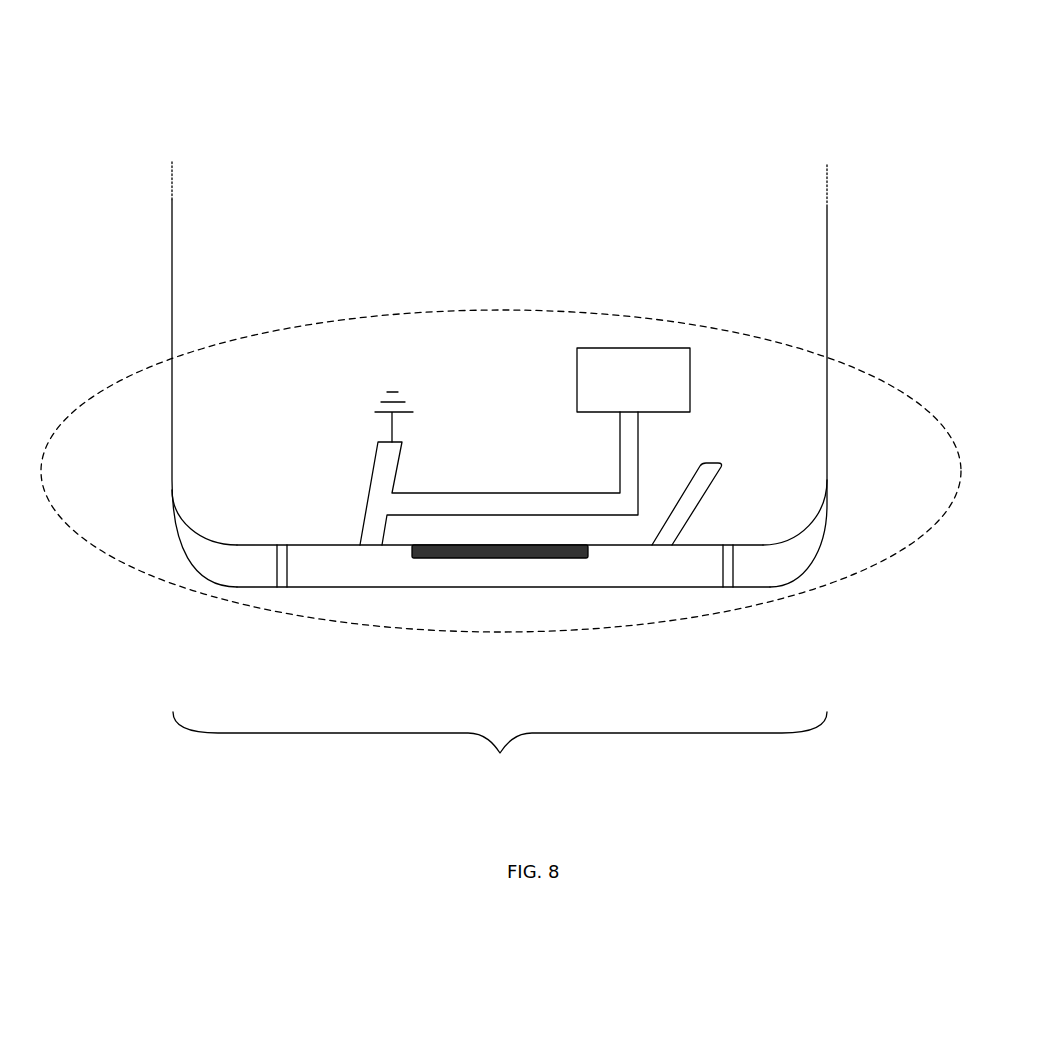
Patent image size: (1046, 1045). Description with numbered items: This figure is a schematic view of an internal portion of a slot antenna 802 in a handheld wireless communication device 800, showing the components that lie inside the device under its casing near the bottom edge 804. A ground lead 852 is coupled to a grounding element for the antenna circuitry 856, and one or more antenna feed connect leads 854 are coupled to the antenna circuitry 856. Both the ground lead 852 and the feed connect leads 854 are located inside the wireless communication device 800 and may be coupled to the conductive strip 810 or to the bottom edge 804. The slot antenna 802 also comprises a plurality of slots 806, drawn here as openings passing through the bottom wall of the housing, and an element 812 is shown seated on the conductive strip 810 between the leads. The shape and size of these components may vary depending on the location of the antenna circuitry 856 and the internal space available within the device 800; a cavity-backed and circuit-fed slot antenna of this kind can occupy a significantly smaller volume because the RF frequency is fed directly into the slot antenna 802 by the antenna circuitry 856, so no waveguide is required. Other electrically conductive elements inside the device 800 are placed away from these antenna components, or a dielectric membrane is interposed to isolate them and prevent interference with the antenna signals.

The wireless communication device 800 is at (704, 97).
The slot antenna 802 is at (607, 312).
The bottom edge 804 is at (500, 749).
The slots 806 is at (280, 580).
The conductive strip 810 is at (392, 572).
The audio component / mesh element 812 is at (567, 560).
The ground lead 852 is at (380, 463).
The antenna feed connect leads 854 is at (628, 453).
The antenna circuitry 856 is at (633, 380).